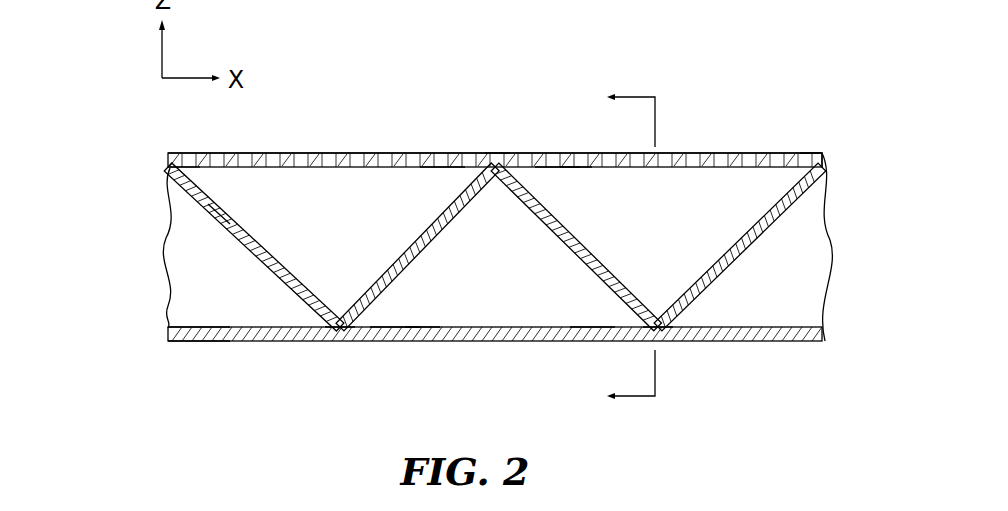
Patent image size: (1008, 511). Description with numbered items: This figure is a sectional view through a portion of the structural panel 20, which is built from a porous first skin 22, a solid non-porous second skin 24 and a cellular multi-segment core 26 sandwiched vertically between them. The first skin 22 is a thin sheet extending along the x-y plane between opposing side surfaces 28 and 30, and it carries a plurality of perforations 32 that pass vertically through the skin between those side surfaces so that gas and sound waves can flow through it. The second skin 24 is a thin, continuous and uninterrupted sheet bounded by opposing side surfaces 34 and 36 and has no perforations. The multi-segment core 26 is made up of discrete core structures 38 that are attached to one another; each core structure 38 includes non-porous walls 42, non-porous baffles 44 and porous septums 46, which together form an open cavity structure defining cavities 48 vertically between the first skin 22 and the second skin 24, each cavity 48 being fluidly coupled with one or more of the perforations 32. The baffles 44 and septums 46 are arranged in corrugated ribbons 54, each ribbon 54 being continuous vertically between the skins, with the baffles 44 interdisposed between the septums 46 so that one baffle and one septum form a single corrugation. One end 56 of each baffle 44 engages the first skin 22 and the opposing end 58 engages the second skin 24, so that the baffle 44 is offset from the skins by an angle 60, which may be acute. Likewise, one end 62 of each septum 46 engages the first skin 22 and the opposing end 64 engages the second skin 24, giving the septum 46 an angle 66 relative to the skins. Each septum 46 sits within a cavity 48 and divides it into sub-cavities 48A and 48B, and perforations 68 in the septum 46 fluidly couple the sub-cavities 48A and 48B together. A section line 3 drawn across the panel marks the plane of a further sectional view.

The structural panel 20 is at (800, 70).
The first skin 22 is at (159, 161).
The second skin 24 is at (161, 342).
The multi-segment core 26 is at (125, 168).
The side surface 28 is at (167, 178).
The side surface 30 is at (180, 153).
The perforations 32 is at (305, 153).
The side surface 34 is at (185, 327).
The side surface 36 is at (182, 342).
The core structure 38 is at (424, 259).
The non-porous walls 42 is at (825, 258).
The baffles 44 is at (263, 243).
The septums 46 is at (410, 267).
The cavities 48 is at (576, 180).
The sub-cavity 48A is at (333, 213).
The sub-cavity 48B is at (510, 302).
The corrugated ribbon 54 is at (208, 218).
The end of baffle 56 is at (497, 152).
The opposing end of baffle 58 is at (507, 366).
The angle 60 is at (550, 195).
The end of septum 62 is at (812, 152).
The opposing end of septum 64 is at (340, 332).
The angle 66 is at (433, 174).
The perforations 68 is at (430, 258).
The section line 3- 3 is at (622, 248).